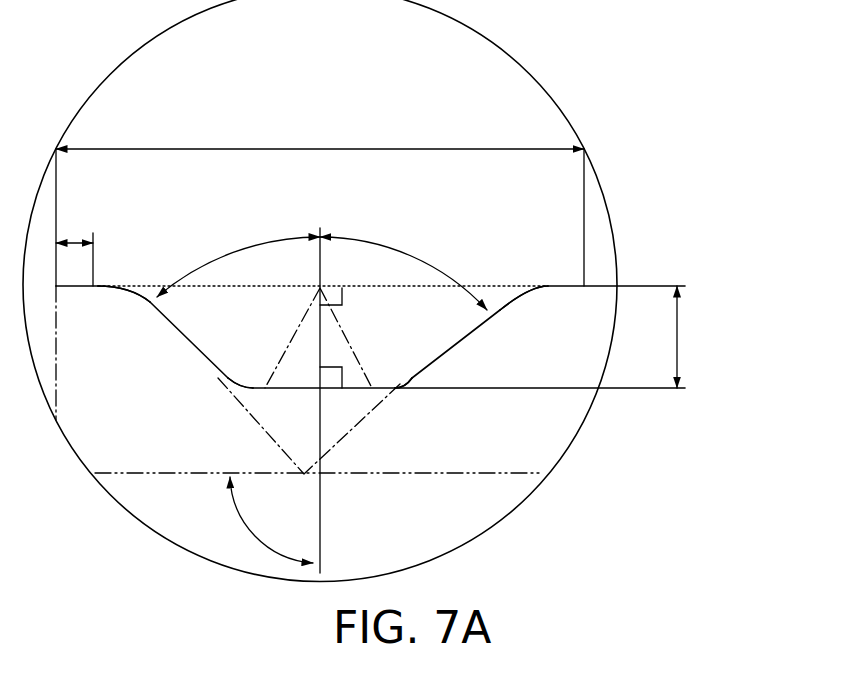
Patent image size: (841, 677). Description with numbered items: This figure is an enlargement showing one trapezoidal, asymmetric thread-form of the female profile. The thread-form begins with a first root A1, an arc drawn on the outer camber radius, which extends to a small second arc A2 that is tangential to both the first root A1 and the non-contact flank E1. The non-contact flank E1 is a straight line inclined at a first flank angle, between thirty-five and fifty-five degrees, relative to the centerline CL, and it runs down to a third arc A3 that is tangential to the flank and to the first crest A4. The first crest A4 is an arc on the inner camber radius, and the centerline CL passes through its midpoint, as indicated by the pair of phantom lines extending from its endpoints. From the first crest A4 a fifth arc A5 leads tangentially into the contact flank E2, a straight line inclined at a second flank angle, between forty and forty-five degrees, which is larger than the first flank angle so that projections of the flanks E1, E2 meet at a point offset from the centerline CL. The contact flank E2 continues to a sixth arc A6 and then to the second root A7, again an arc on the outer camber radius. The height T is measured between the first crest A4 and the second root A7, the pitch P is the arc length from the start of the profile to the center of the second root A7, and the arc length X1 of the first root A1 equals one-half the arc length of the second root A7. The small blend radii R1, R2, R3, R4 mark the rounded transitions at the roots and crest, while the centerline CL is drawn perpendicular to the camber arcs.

The pitch P is at (333, 147).
The arc length X1 is at (73, 240).
The first root A1 is at (77, 288).
The second arc A2 is at (144, 300).
The third arc A3 is at (237, 390).
The first crest A4 is at (333, 392).
The fifth arc A5 is at (413, 377).
The sixth arc A6 is at (520, 287).
The second root A7 is at (568, 285).
The leading crest radius R1 is at (131, 298).
The leading root radius R2 is at (253, 360).
The trailing root radius R3 is at (390, 386).
The trailing crest radius R4 is at (517, 305).
The non-contact flank E1 is at (192, 347).
The contact flank E2 is at (458, 343).
The centerline CL is at (318, 338).
The height T is at (678, 340).